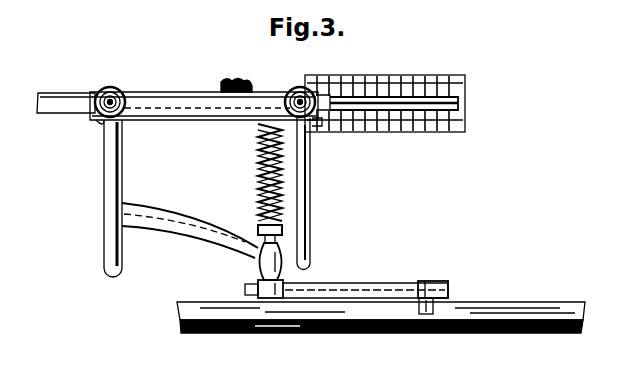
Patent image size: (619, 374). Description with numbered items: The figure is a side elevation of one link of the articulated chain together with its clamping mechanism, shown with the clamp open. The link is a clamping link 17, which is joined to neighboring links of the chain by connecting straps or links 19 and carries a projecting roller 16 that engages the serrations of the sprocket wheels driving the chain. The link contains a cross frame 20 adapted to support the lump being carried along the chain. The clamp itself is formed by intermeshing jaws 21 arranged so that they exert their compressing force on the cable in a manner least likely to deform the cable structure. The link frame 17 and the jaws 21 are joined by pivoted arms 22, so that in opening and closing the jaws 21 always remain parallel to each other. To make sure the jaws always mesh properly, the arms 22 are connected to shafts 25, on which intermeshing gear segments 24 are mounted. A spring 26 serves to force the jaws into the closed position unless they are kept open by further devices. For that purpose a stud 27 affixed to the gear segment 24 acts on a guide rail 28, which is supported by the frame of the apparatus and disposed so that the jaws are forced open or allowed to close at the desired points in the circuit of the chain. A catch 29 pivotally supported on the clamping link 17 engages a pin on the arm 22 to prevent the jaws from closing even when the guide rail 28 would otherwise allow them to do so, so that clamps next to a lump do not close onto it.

The projecting roller 16 is at (118, 90).
The clamping link 17 is at (176, 92).
The connecting strap 19 is at (60, 100).
The cross frame 20 is at (319, 228).
The intermeshing jaw 21 is at (455, 92).
The pivoted arm 22 is at (419, 112).
The intermeshing gear segment 24 is at (403, 283).
The shaft 25 is at (258, 203).
The spring 26 is at (258, 171).
The stud 27 is at (410, 321).
The guide rail 28 is at (481, 316).
The catch 29 is at (252, 88).